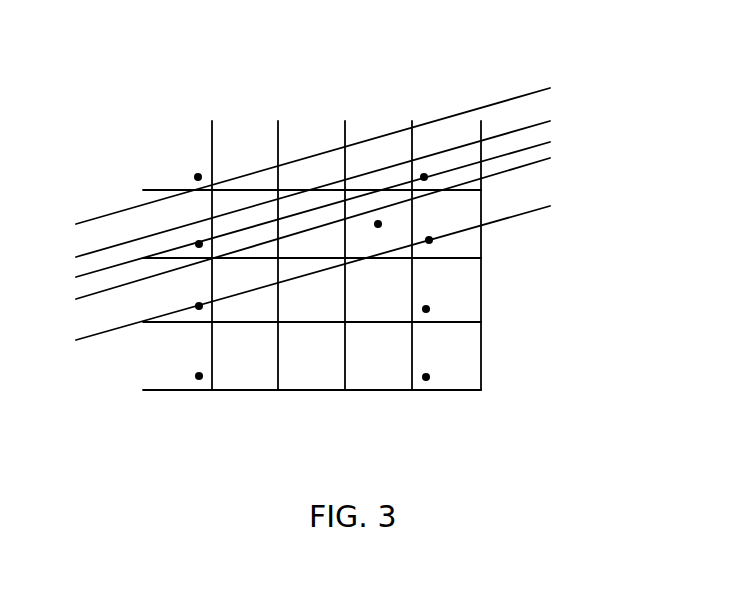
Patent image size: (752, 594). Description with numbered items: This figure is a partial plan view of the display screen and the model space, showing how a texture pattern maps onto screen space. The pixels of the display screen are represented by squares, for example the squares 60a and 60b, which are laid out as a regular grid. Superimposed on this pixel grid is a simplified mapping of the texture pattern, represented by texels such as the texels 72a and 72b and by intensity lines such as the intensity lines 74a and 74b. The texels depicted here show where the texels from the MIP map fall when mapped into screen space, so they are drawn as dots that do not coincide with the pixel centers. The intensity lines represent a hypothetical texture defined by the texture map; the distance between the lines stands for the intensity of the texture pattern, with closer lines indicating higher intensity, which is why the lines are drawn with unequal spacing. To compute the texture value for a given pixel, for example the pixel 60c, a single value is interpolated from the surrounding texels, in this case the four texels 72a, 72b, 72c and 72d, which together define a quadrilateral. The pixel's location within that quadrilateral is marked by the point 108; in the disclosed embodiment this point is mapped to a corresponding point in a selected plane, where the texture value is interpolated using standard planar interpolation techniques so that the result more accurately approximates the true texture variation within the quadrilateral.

The pixel square 60a is at (312, 279).
The pixel square 60b is at (497, 279).
The pixel 60c is at (369, 224).
The texel 72a is at (125, 202).
The texel 72b is at (150, 129).
The texel 72c is at (461, 120).
The texel 72d is at (511, 271).
The intensity line 74a is at (344, 149).
The intensity line 74b is at (370, 208).
The point 108 is at (347, 141).